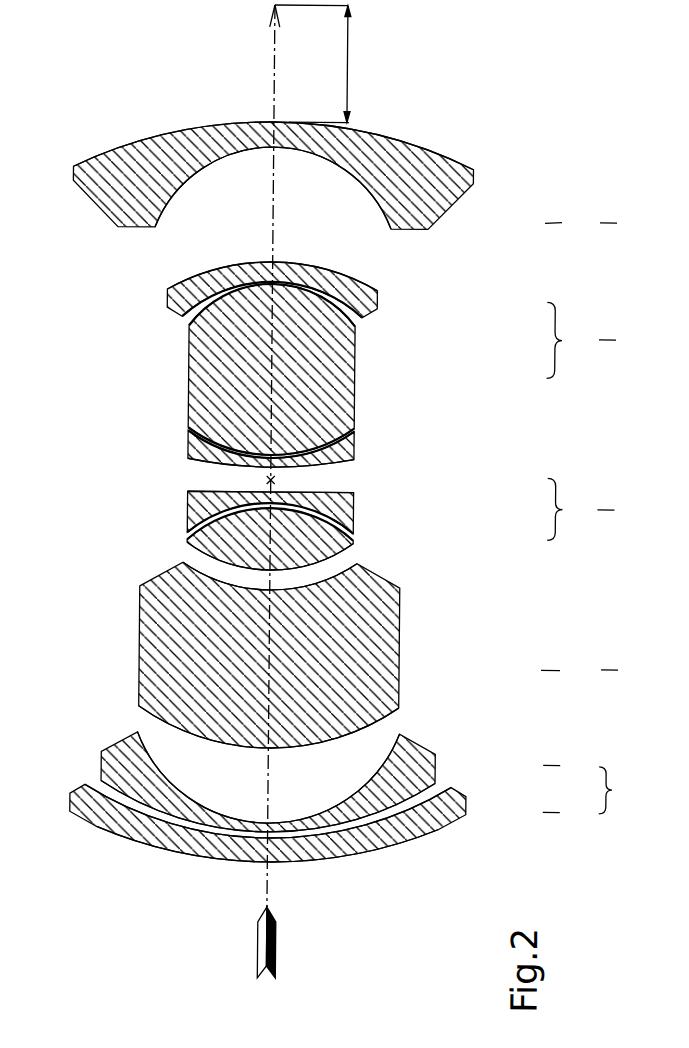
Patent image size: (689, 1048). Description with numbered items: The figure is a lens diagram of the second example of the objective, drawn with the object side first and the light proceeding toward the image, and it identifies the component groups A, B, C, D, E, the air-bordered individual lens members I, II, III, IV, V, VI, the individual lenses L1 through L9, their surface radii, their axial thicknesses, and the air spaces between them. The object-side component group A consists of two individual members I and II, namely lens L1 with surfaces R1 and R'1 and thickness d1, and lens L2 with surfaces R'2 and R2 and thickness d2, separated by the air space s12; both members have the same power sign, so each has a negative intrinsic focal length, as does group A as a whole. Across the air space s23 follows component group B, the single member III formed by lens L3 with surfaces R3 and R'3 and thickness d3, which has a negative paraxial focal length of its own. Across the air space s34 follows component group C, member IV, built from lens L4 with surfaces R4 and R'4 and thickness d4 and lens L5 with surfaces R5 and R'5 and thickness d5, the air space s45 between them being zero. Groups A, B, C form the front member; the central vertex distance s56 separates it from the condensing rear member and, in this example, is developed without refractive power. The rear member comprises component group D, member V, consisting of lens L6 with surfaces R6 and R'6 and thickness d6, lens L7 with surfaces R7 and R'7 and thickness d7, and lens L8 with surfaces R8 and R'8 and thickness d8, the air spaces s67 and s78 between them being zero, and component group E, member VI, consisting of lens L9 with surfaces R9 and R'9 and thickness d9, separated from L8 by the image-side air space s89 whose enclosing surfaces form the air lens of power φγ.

The first lens L1 is at (470, 806).
The second lens L2 is at (444, 764).
The third lens L3 is at (401, 666).
The fourth lens L4 is at (362, 549).
The fifth lens L5 is at (361, 494).
The sixth lens L6 is at (361, 436).
The seventh lens L7 is at (360, 337).
The eighth lens L8 is at (375, 299).
The ninth lens L9 is at (462, 206).
The front surface radius of lens L1 R1 is at (104, 829).
The rear surface radius of lens L1 R'1 is at (228, 812).
The front surface radius of lens L2 R2 is at (110, 783).
The rear surface radius of lens L2 R'2 is at (218, 766).
The front surface radius of lens L3 R3 is at (153, 723).
The rear surface radius of lens L3 R'3 is at (215, 595).
The front surface radius of lens L4 R4 is at (205, 561).
The rear surface radius of lens L4 R'4 is at (247, 525).
The front surface radius of lens L5 R5 is at (193, 516).
The rear surface radius of lens L5 R'5 is at (237, 478).
The front surface radius of lens L6 R6 is at (204, 461).
The rear surface radius of lens L6 R'6 is at (229, 430).
The front surface radius of lens L7 R7 is at (214, 438).
The rear surface radius of lens L7 R'7 is at (230, 322).
The front surface radius of lens L8 R8 is at (191, 318).
The rear surface radius of lens L8 R'8 is at (234, 272).
The front surface radius of lens L9 R9 is at (185, 188).
The rear surface radius of lens L9 R'9 is at (274, 128).
The axial thickness of lens L1 d1 is at (276, 856).
The axial thickness of lens L2 d2 is at (270, 829).
The axial thickness of lens L3 d3 is at (270, 672).
The axial thickness of lens L4 d4 is at (272, 540).
The axial thickness of lens L5 d5 is at (214, 478).
The axial thickness of lens L6 d6 is at (246, 478).
The axial thickness of lens L7 d7 is at (274, 373).
The axial thickness of lens L8 d8 is at (275, 278).
The axial thickness of lens L9 d9 is at (290, 134).
The air space between L1 and L2 s12 is at (283, 850).
The air space between L2 and L3 s23 is at (277, 787).
The air space between L3 and L4 s34 is at (278, 585).
The air space between L4 and L5 s45 is at (362, 504).
The central vertex distance s56 is at (281, 489).
The air space between L6 and L7 s67 is at (360, 383).
The air space between L7 and L8 s78 is at (285, 263).
The image-side air space s89 is at (277, 205).
The first individual lens member I is at (567, 811).
The second individual lens member II is at (567, 764).
The third individual lens member III is at (579, 669).
The fourth individual lens member IV is at (581, 509).
The fifth individual lens member V is at (582, 340).
The sixth individual lens member VI is at (581, 226).
The object-side component group A is at (625, 790).
The inner component group of the front member B is at (638, 668).
The third component group of the front member C is at (640, 510).
The first component group of the rear member D is at (639, 340).
The second component group of the rear member E is at (639, 225).